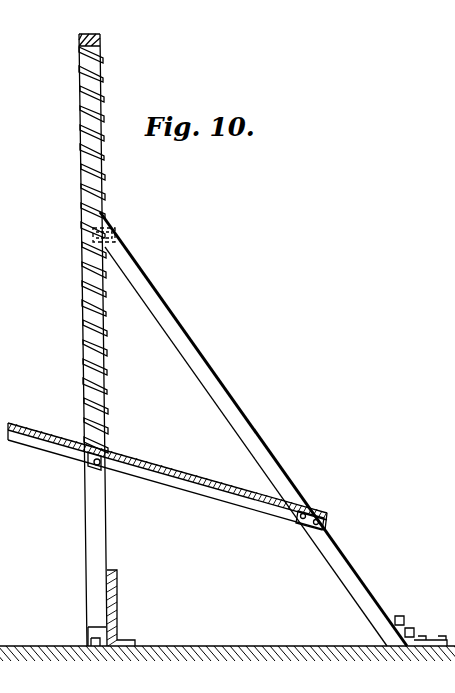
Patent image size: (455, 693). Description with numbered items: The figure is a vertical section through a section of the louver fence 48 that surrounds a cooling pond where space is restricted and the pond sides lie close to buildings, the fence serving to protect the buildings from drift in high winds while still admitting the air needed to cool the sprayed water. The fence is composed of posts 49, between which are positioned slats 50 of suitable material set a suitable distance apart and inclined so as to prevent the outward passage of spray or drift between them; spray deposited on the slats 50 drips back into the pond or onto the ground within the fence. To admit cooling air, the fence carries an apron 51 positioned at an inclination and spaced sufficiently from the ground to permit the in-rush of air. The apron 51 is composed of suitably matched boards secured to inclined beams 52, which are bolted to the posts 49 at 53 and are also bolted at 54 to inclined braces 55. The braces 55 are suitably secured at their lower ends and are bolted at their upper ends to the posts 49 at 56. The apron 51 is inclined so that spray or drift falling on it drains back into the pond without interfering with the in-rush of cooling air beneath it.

The louver fence 48 is at (74, 284).
The post 49 is at (79, 100).
The slat 50 is at (80, 178).
The apron 51 is at (170, 462).
The inclined beam 52 is at (168, 486).
The bolted connection of beam to post 53 is at (88, 462).
The bolted connection of beam to brace 54 is at (302, 523).
The inclined brace 55 is at (235, 406).
The bolted connection of brace to post 56 is at (114, 234).